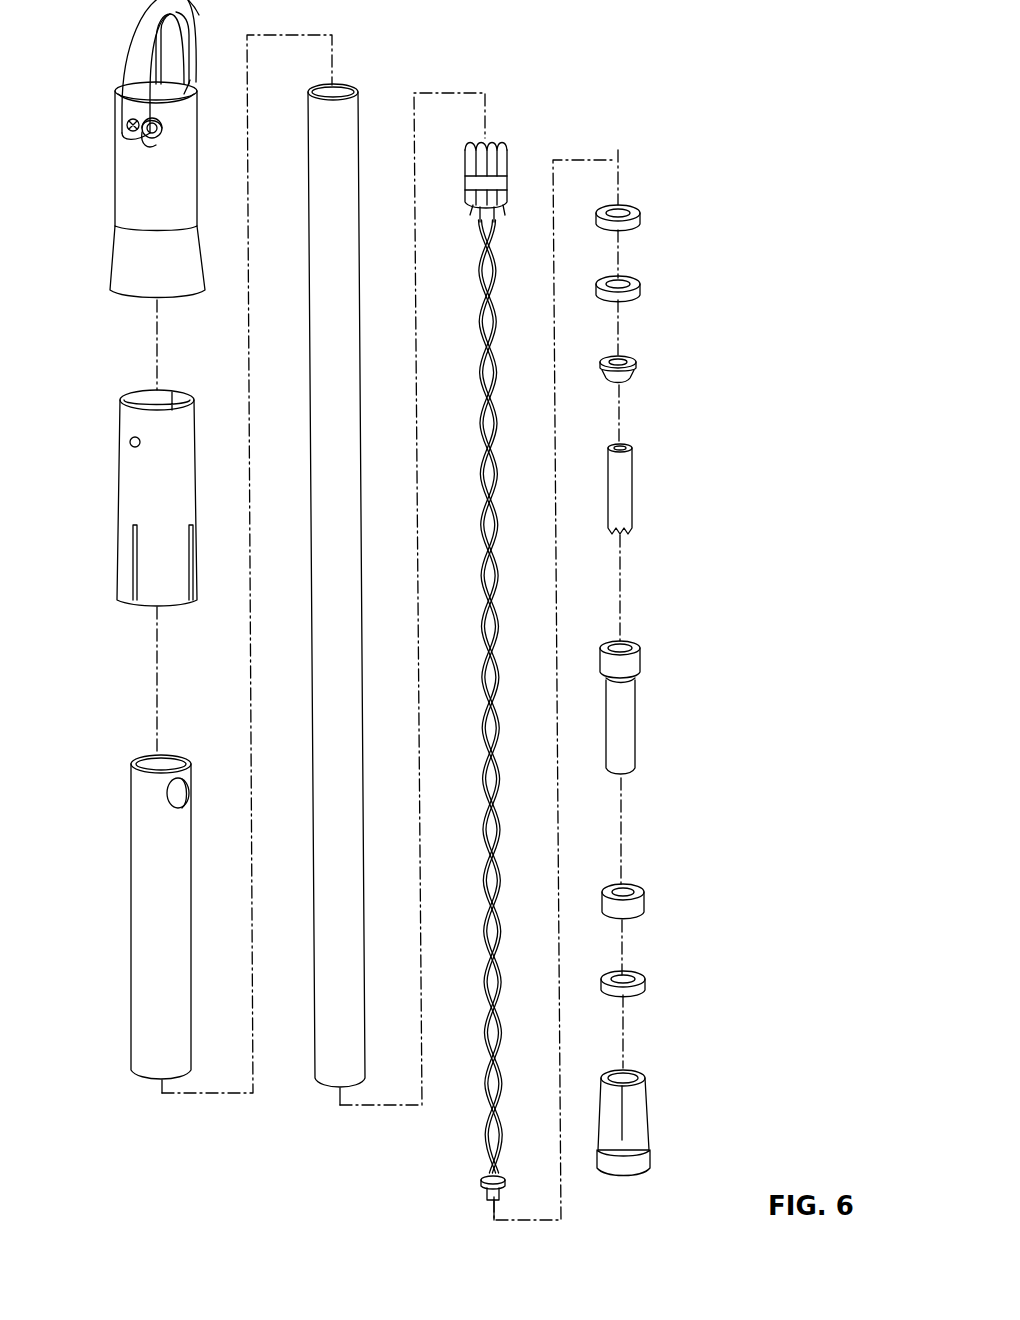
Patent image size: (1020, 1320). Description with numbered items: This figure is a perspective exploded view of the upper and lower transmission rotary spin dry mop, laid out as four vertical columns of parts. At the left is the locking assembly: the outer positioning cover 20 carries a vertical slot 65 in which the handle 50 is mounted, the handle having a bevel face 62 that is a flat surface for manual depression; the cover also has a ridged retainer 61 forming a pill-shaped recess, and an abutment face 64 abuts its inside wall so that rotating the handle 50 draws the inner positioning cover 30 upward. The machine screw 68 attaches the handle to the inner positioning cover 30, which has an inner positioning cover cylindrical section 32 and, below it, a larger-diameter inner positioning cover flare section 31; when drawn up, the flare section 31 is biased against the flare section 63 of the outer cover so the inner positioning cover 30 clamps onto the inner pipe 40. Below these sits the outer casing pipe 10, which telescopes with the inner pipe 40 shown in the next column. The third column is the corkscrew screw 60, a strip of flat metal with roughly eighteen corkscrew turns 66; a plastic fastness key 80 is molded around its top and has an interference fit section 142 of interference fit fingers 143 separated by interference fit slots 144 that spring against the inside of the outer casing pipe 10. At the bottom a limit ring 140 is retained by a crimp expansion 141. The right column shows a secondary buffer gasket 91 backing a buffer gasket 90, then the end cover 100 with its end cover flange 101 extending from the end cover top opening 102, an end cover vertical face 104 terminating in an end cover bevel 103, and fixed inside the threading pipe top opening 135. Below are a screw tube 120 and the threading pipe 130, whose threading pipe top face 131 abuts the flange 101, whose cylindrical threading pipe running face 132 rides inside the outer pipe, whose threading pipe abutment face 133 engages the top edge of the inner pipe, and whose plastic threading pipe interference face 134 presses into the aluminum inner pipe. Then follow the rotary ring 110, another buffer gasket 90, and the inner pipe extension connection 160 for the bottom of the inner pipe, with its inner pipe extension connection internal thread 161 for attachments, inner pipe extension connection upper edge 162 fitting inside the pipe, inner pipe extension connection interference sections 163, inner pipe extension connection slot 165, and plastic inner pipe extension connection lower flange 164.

The outer casing pipe 10 is at (138, 845).
The outer positioning cover 20 is at (118, 173).
The inner positioning cover 30 is at (127, 498).
The inner positioning cover flare section 31 is at (120, 560).
The inner positioning cover cylindrical section 32 is at (128, 462).
The inner pipe 40 is at (322, 885).
The handle 50 is at (130, 62).
The corkscrew screw 60 is at (462, 690).
The ridged retainer 61 is at (163, 130).
The bevel face 62 is at (208, 16).
The flare section 63 is at (123, 264).
The abutment face 64 is at (138, 142).
The vertical slot 65 is at (188, 82).
The corkscrew turns 66 is at (487, 968).
The machine screw 68 is at (127, 128).
The fastness key 80 is at (491, 165).
The buffer gasket 90 is at (642, 292).
The secondary buffer gasket 91 is at (638, 222).
The end cover 100 is at (636, 376).
The end cover flange 101 is at (606, 363).
The end cover top opening 102 is at (628, 361).
The end cover bevel 103 is at (627, 382).
The end cover vertical face 104 is at (606, 374).
The rotary ring 110 is at (643, 903).
The screw tube 120 is at (628, 488).
The threading pipe 130 is at (632, 686).
The threading pipe top face 131 is at (636, 646).
The threading pipe running face 132 is at (643, 660).
The threading pipe abutment face 133 is at (633, 680).
The threading pipe interference face 134 is at (626, 748).
The threading pipe top opening 135 is at (612, 648).
The limit ring 140 is at (455, 1185).
The crimp expansion 141 is at (486, 1196).
The interference fit section 142 is at (508, 193).
The interference fit fingers 143 is at (474, 210).
The interference fit slots 144 is at (503, 210).
The inner pipe extension connection 160 is at (642, 1098).
The inner pipe extension connection internal thread 161 is at (630, 1072).
The inner pipe extension connection upper edge 162 is at (643, 1075).
The inner pipe extension connection interference section 163 is at (648, 1140).
The inner pipe extension connection lower flange 164 is at (651, 1170).
The inner pipe extension connection slot 165 is at (612, 1100).